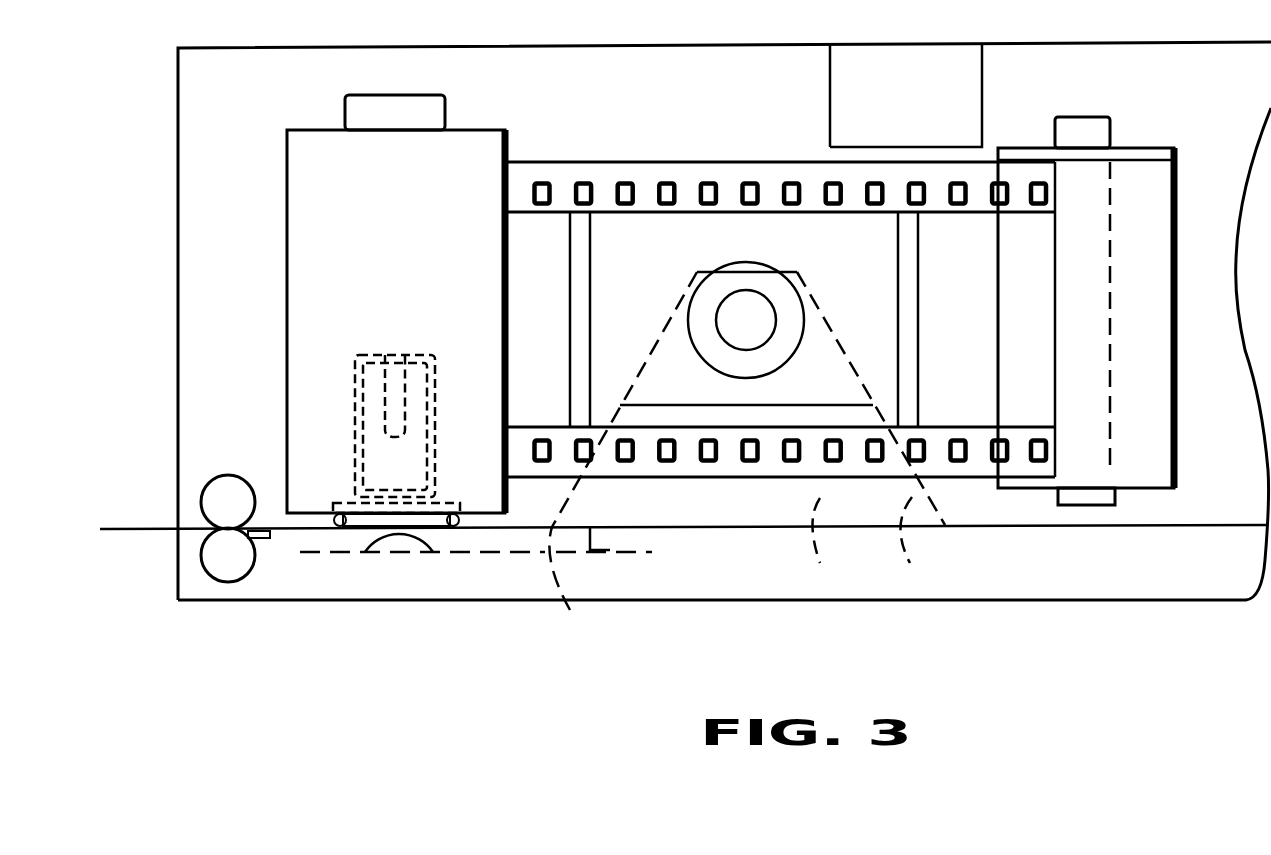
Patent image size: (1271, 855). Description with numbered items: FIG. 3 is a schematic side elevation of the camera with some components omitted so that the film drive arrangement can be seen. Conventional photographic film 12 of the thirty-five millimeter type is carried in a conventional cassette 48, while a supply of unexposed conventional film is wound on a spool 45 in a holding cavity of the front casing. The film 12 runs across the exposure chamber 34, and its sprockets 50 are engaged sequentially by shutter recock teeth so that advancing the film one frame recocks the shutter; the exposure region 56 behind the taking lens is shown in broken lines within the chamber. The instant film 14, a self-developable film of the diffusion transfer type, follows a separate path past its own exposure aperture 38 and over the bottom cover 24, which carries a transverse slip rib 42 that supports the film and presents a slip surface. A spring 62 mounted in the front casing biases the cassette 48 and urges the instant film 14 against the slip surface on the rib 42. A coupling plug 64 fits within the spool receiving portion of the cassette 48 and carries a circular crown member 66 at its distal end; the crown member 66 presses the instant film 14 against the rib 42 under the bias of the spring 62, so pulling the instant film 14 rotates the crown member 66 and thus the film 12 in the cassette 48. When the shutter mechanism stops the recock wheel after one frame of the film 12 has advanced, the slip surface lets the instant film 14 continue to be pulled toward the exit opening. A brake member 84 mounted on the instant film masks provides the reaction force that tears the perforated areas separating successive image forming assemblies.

The conventional photographic film 12 is at (643, 168).
The instant film 14 is at (275, 525).
The bottom cover 24 is at (697, 601).
The exposure chamber 34 is at (932, 540).
The exposure aperture for the instant film 38 is at (846, 540).
The slip rib 42 is at (400, 556).
The spool 45 is at (1080, 126).
The 35 mm cassette 48 is at (507, 145).
The sprockets 50 is at (957, 204).
The exposure opening / lens 56 is at (826, 336).
The spring 62 is at (447, 108).
The coupling plug 64 is at (438, 376).
The circular crown member 66 is at (340, 502).
The brake member 84 is at (270, 541).